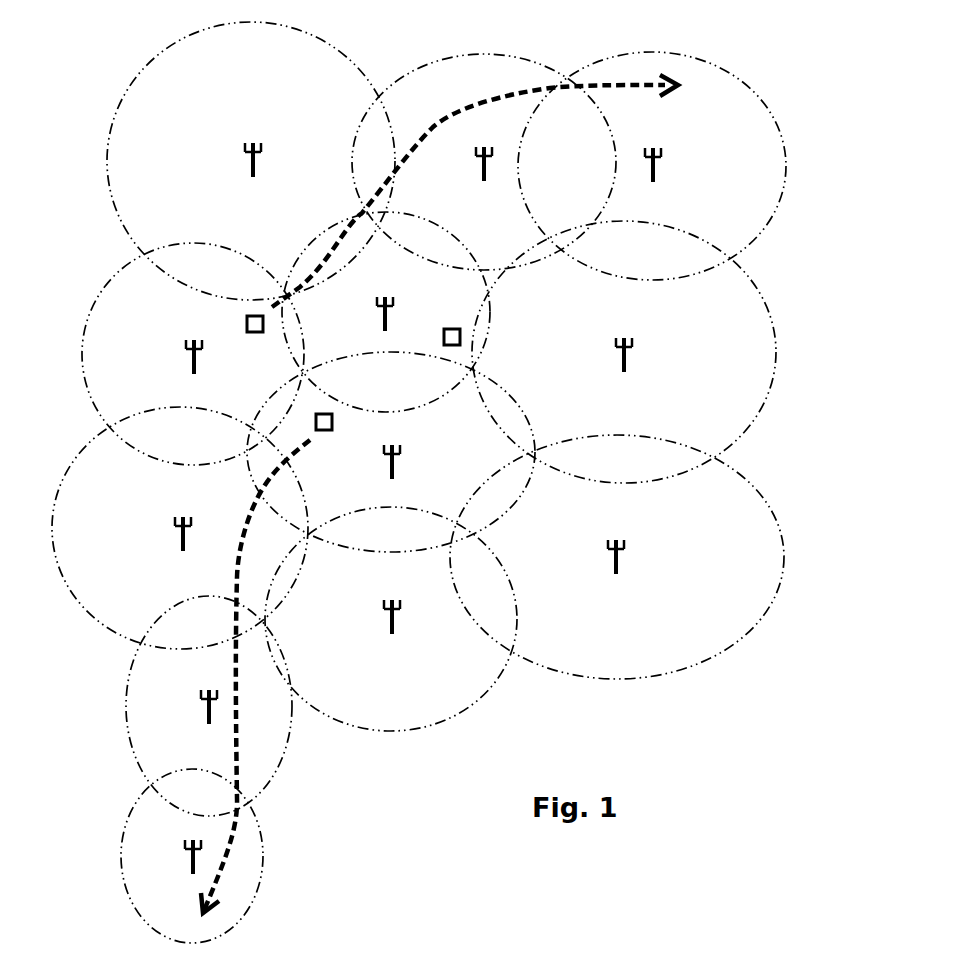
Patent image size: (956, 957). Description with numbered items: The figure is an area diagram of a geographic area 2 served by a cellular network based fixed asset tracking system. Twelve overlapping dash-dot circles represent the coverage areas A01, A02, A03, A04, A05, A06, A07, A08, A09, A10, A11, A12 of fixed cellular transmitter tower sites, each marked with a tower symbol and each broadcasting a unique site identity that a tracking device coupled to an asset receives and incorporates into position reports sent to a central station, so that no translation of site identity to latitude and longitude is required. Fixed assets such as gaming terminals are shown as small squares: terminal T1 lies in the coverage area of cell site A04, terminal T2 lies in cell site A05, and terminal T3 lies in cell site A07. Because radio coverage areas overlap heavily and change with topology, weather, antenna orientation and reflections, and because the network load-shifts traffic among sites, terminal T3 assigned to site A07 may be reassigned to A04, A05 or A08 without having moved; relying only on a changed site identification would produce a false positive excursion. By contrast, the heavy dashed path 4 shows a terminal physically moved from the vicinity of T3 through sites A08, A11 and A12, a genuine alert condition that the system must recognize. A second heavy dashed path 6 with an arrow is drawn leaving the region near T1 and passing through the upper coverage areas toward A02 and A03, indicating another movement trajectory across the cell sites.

The geographic area 2 is at (669, 727).
The path 4 is at (237, 577).
The second movement path of mobile terminal 6 is at (458, 118).
The coverage area A01 is at (251, 161).
The coverage area A02 is at (484, 162).
The coverage area A03 is at (652, 166).
The cell site coverage area A04 is at (193, 354).
The cell site coverage area A05 is at (386, 312).
The coverage area A06 is at (624, 352).
The cell site coverage area A07 is at (391, 452).
The cell site coverage area A08 is at (180, 528).
The coverage area A09 is at (391, 619).
The coverage area A10 is at (617, 557).
The cell site coverage area A11 is at (209, 706).
The cell site coverage area A12 is at (192, 856).
The terminal T1 is at (243, 325).
The terminal T2 is at (440, 339).
The terminal T3 is at (312, 423).